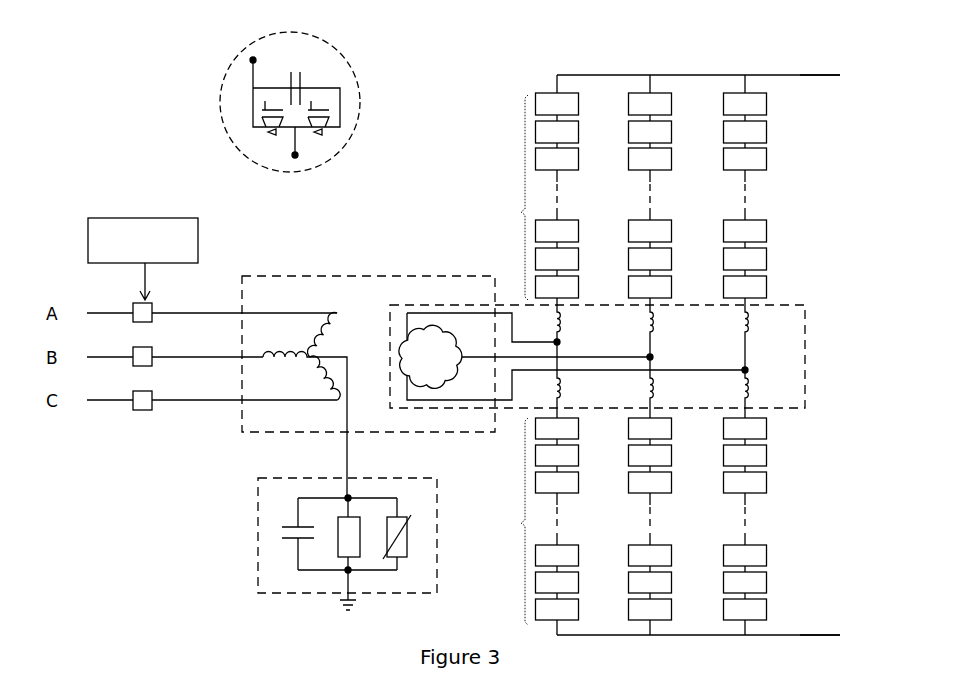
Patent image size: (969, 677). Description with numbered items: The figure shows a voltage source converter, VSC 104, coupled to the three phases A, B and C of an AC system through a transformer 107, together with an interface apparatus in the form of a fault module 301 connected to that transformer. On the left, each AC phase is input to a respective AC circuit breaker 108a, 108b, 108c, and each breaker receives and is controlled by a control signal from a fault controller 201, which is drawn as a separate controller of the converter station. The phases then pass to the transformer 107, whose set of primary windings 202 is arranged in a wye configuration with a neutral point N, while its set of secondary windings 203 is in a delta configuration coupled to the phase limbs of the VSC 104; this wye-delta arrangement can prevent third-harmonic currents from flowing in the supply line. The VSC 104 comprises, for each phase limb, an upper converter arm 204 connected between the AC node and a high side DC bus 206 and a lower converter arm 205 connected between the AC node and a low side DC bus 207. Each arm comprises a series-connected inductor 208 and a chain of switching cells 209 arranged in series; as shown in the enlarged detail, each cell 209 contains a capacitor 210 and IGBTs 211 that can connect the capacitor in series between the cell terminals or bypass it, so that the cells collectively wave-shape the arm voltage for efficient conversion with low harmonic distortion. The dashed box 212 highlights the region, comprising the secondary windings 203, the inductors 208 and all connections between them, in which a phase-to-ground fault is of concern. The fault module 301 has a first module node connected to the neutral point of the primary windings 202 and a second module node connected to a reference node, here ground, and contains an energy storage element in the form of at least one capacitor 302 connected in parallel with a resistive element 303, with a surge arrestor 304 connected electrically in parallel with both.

The voltage source converter 104 is at (661, 355).
The transformer 107 is at (286, 275).
The AC circuit breaker 108a is at (133, 305).
The AC circuit breaker 108b is at (133, 349).
The AC circuit breaker 108c is at (133, 393).
The fault controller 201 is at (143, 259).
The set of primary windings 202 is at (334, 314).
The set of secondary windings 203 is at (439, 330).
The upper converter arm 204 is at (622, 196).
The lower converter arm 205 is at (622, 521).
The high side DC bus 206 is at (822, 95).
The low side DC bus 207 is at (830, 614).
The inductor 208 is at (564, 329).
The switching cell 209 is at (372, 117).
The capacitor 210 is at (303, 75).
The IGBT 211 is at (262, 130).
The dashed box 212 is at (806, 351).
The fault module 301 is at (326, 527).
The energy storage element 302 is at (287, 543).
The resistive element 303 is at (364, 527).
The surge arrestor 304 is at (410, 552).